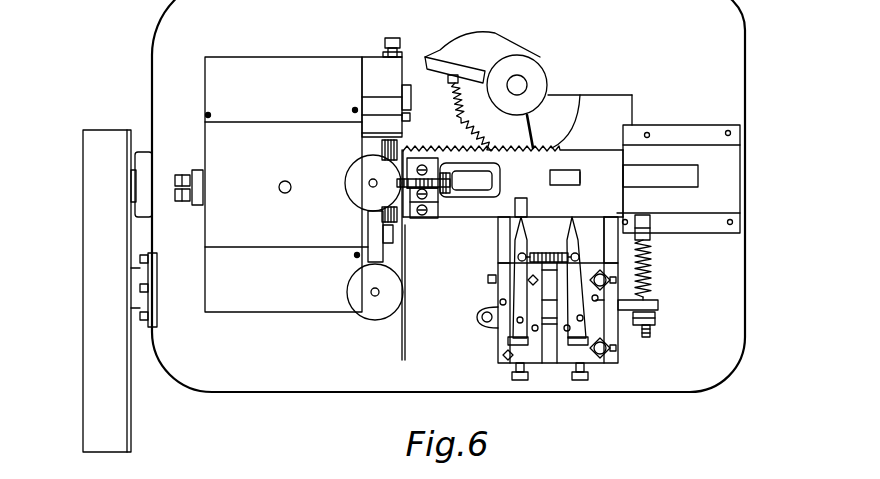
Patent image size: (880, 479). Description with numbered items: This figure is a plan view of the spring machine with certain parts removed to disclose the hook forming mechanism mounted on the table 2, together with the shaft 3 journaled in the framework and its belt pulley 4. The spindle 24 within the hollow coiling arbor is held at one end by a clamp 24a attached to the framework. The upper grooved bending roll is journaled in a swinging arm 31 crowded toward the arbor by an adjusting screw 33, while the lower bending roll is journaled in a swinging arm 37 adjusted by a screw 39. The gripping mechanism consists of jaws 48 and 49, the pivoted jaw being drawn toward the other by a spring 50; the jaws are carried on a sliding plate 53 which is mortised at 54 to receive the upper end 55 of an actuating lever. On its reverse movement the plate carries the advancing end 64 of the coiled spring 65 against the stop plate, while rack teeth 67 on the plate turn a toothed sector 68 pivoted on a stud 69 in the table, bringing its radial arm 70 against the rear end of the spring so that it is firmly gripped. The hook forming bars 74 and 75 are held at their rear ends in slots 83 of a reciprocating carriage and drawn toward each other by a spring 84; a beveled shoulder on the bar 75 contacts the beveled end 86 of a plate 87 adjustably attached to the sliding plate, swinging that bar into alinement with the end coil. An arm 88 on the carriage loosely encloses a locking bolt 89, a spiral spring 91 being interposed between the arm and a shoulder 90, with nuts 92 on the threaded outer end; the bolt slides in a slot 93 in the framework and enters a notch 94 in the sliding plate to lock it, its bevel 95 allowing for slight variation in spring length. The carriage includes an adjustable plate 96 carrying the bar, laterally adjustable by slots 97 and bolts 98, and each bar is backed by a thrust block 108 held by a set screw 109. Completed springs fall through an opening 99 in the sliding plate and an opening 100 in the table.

The table 2 is at (735, 68).
The shaft 3 is at (138, 302).
The belt pulley 4 is at (125, 349).
The spindle 24 is at (176, 182).
The clamp 24a is at (192, 181).
The arm 31 is at (378, 233).
The adjusting screw 33 is at (369, 183).
The arm 37 is at (372, 262).
The screw 39 is at (371, 292).
The jaw 48 is at (403, 197).
The jaw 49 is at (403, 167).
The spring 50 is at (430, 150).
The sliding plate 53 is at (678, 179).
The mortise 54 is at (582, 180).
The upper end of lever 55 is at (566, 172).
The advancing end of coiled spring 64 is at (455, 181).
The coiled spring 65 is at (436, 212).
The rack teeth 67 is at (540, 148).
The toothed sector 68 is at (473, 91).
The stud 69 is at (522, 82).
The radial arm 70 is at (436, 55).
The steel bar 74 is at (640, 200).
The steel bar 75 is at (527, 229).
The slots 83 is at (578, 262).
The spring 84 is at (557, 250).
The beveled end 86 is at (410, 219).
The plate 87 is at (432, 216).
The arm 88 is at (660, 303).
The locking bolt 89 is at (652, 333).
The shoulder 90 is at (650, 241).
The spiral spring 91 is at (653, 273).
The nuts 92 is at (657, 317).
The slot 93 is at (652, 219).
The notch 94 is at (521, 204).
The bevel 95 is at (648, 226).
The adjustable plate 96 is at (615, 336).
The slots 97 is at (610, 282).
The bolts 98 is at (608, 292).
The opening 99 is at (456, 152).
The opening 100 is at (479, 192).
The thrust block 108 is at (528, 342).
The set screw 109 is at (521, 384).